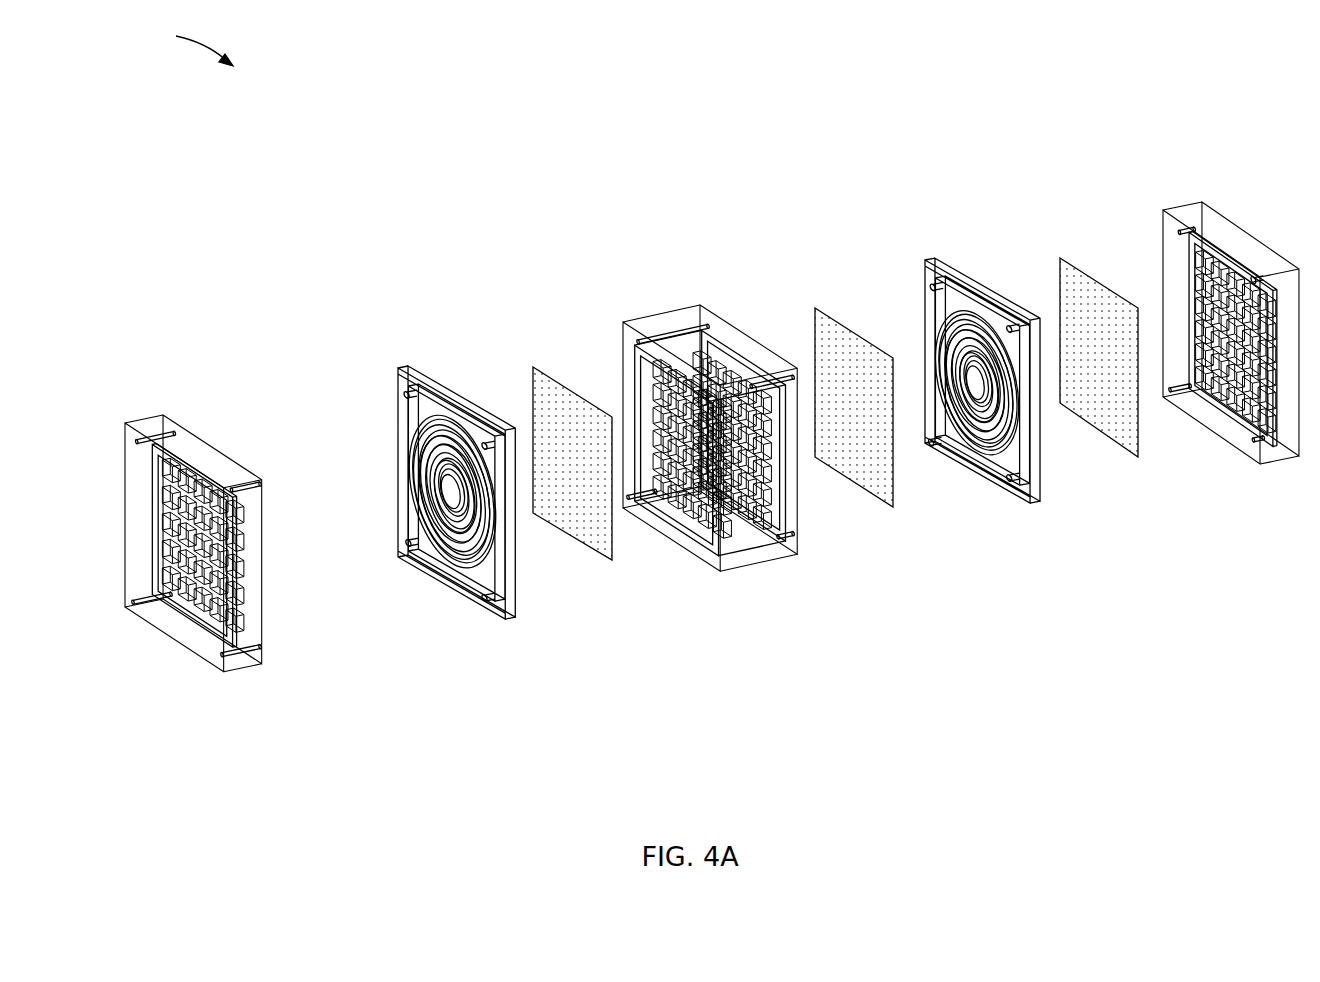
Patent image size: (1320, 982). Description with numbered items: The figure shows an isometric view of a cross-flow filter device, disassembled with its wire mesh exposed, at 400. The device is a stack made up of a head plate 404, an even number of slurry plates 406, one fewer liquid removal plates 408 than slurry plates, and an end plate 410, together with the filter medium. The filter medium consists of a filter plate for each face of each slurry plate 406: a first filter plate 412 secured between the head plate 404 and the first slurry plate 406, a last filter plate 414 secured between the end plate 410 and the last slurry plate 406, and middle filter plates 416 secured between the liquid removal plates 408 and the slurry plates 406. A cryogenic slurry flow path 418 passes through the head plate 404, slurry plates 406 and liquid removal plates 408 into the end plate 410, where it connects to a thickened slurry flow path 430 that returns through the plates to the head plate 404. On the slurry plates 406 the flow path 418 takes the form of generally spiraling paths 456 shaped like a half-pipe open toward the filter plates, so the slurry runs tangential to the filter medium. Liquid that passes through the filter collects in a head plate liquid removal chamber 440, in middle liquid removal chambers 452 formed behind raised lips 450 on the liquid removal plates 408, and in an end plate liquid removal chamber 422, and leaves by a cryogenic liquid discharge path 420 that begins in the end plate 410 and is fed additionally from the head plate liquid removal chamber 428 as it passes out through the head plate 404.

The disassembled wire mesh view 400 is at (173, 42).
The head plate 404 is at (230, 512).
The slurry plate 406 is at (709, 455).
The liquid removal plate 408 is at (743, 397).
The end plate 410 is at (1227, 301).
The first filter plate 412 is at (398, 568).
The last filter plate 414 is at (1138, 457).
The middle filter plate 416 is at (613, 567).
The cryogenic slurry flow path 418 is at (150, 443).
The cryogenic liquid discharge path 420 is at (147, 607).
The end plate liquid removal chamber 422 is at (1263, 402).
The head plate liquid removal chamber 428 is at (253, 632).
The thickened slurry flow path 430 is at (238, 490).
The head plate liquid removal chamber 440 is at (203, 545).
The raised lip 450 is at (739, 434).
The middle liquid removal chamber 452 is at (730, 520).
The generally spiraling path 456 is at (452, 492).